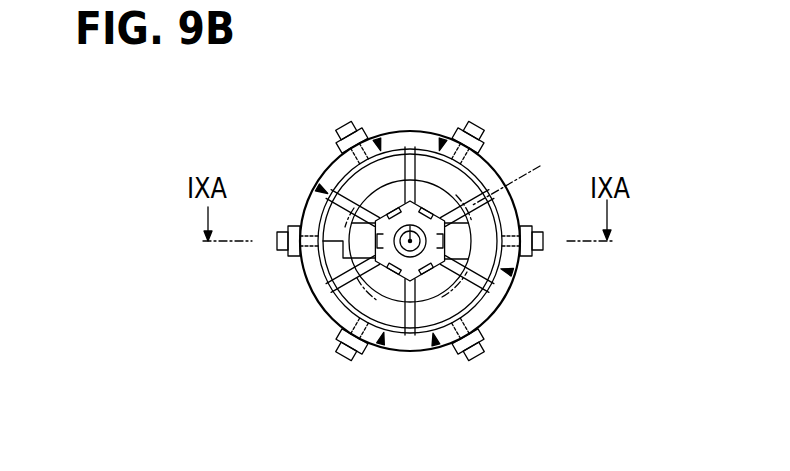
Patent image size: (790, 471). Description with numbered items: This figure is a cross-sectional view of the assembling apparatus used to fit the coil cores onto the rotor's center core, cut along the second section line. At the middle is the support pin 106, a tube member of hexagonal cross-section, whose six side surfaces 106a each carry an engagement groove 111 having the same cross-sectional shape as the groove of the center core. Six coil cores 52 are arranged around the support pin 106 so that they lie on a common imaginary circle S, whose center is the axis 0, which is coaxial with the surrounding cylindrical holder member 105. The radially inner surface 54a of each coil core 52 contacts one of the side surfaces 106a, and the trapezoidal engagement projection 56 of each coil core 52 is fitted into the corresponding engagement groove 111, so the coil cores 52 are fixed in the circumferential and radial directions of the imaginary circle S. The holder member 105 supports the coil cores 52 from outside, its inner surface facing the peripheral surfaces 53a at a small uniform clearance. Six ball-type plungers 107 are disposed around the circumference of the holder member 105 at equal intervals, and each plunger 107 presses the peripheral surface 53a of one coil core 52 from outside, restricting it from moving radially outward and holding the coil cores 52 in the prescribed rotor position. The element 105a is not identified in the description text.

The coil core 52 is at (376, 137).
The plunger 107 is at (343, 127).
The engagement groove 111 is at (393, 197).
The support pin 106 is at (409, 200).
The radially inner surface 54a is at (414, 196).
The axis 0 is at (322, 185).
The side surface 106a is at (488, 170).
The engagement projection 56 is at (350, 223).
The holder member 105 is at (500, 300).
The flange 105a is at (332, 272).
The peripheral surface 53a is at (357, 313).
The imaginary circle S is at (540, 166).